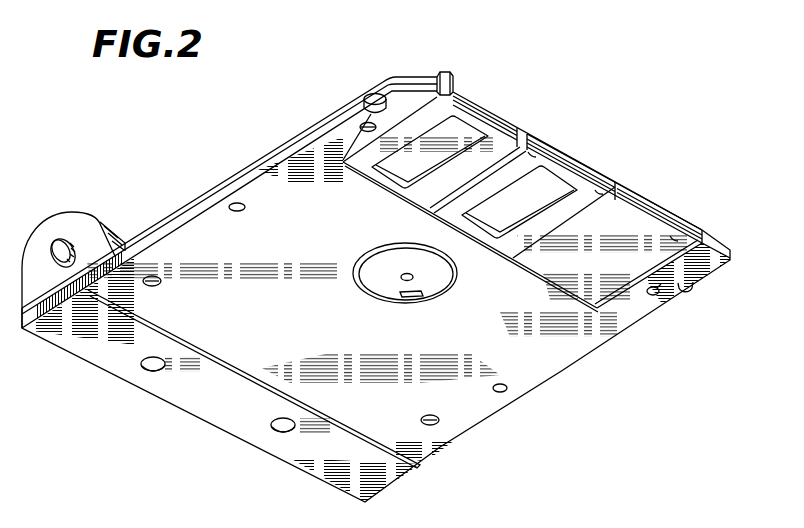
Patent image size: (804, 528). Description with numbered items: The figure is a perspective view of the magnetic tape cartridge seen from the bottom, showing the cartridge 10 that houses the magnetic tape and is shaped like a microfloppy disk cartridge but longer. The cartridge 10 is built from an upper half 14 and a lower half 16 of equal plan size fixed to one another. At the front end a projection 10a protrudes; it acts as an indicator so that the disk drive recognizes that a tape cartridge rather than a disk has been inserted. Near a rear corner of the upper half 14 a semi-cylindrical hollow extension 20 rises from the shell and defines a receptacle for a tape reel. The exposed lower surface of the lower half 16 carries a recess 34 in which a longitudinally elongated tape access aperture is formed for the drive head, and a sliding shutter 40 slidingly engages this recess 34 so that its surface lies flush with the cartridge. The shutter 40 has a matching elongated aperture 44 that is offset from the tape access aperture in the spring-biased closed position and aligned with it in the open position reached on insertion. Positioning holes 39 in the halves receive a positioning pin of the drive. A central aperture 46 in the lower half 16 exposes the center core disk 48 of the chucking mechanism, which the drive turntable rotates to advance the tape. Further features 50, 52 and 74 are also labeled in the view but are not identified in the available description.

The cartridge 10 is at (268, 142).
The projection 10a is at (454, 82).
The upper half 14 is at (205, 212).
The lower half 16 is at (206, 210).
The semi-cylindrical hollow extension 20 is at (80, 216).
The recess 34 is at (478, 130).
The positioning holes 39 is at (357, 140).
The sliding shutter 40 is at (636, 217).
The aperture 44 is at (555, 177).
The central aperture 46 is at (456, 271).
The center core disk 48 is at (427, 277).
The center hole 50 is at (404, 274).
The slot 52 is at (408, 298).
The apertures 74 is at (160, 285).